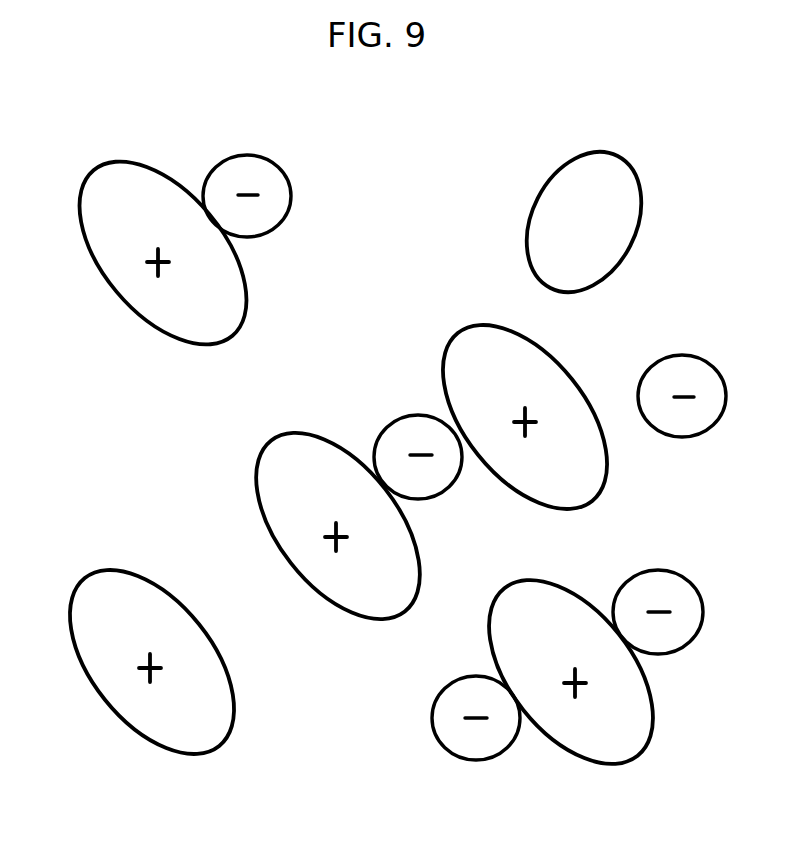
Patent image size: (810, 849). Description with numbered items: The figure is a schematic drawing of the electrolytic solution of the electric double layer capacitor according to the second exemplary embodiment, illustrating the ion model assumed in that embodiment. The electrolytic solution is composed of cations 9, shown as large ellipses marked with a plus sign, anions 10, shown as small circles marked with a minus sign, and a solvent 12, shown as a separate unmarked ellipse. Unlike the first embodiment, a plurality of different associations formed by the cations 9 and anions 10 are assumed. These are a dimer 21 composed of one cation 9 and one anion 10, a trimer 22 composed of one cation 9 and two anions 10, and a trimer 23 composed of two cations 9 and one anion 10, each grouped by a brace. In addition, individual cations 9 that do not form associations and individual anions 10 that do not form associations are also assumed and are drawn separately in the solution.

The cations 9 is at (148, 325).
The anions 10 is at (230, 162).
The solvent 12 is at (548, 178).
The dimer 21 is at (82, 160).
The trimer 22 is at (698, 567).
The trimer 23 is at (257, 335).